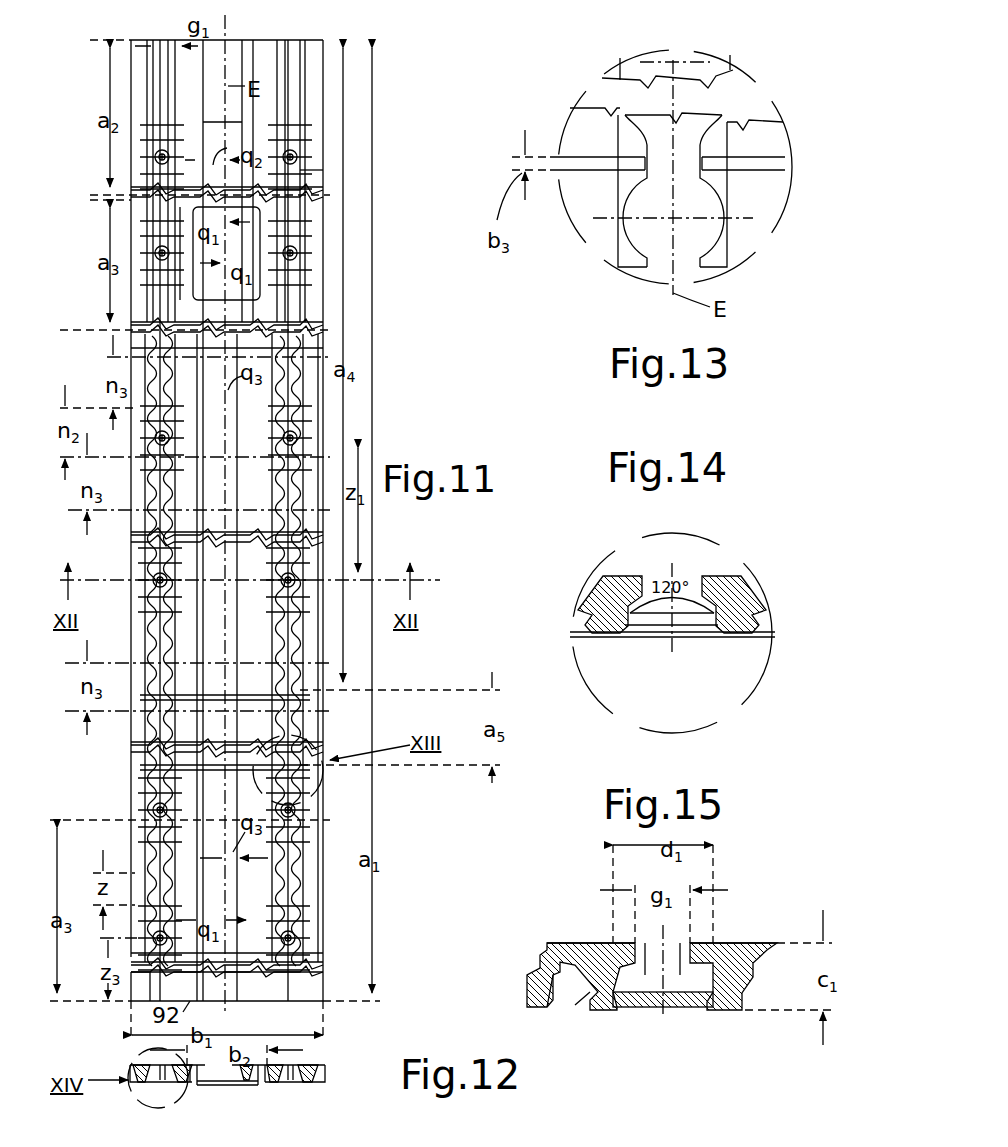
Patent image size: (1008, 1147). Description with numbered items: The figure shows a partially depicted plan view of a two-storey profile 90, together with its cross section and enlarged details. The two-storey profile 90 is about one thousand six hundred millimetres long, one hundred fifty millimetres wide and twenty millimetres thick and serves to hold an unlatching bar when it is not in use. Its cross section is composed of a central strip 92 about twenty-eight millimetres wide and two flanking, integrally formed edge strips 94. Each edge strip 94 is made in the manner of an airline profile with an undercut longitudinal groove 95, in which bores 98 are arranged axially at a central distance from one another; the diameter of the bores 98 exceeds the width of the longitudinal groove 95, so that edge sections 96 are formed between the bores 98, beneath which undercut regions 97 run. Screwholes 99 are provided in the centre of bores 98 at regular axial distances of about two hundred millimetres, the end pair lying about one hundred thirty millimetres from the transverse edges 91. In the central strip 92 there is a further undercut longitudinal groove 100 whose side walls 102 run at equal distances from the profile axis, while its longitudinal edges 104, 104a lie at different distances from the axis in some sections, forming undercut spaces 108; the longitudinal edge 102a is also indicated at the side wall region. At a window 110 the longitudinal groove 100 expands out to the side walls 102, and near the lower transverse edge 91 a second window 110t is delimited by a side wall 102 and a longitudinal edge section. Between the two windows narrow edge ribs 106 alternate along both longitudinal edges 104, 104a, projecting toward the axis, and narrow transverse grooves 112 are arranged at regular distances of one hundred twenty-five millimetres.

In FIG. 11, the two-storey profile 90 is at (318, 120).
In FIG. 12, the two-storey profile 90 is at (332, 1062).
In FIG. 14, the two-storey profile 90 is at (760, 578).
In FIG. 15, the two-storey profile 90 is at (762, 935).
In FIG. 11, the transverse edge 91 is at (158, 38).
In FIG. 11, the central strip 92 is at (300, 634).
In FIG. 13, the central strip 92 is at (630, 263).
In FIG. 11, the edge strip 94 is at (140, 1001).
In FIG. 13, the edge strip 94 is at (767, 187).
In FIG. 15, the edge strip 94 is at (590, 993).
In FIG. 11, the longitudinal groove 95 is at (295, 62).
In FIG. 12, the longitudinal groove 95 is at (310, 1083).
In FIG. 14, the longitudinal groove 95 is at (697, 587).
In FIG. 15, the longitudinal groove 95 is at (680, 952).
In FIG. 11, the edge section 96 is at (300, 400).
In FIG. 13, the edge section 96 is at (625, 180).
In FIG. 15, the edge section 96 is at (717, 950).
In FIG. 15, the undercut region 97 is at (700, 1010).
In FIG. 11, the bore 98 is at (300, 300).
In FIG. 13, the bore 98 is at (703, 238).
In FIG. 15, the bore 98 is at (620, 947).
In FIG. 11, the screwhole 99 is at (292, 262).
In FIG. 14, the screwhole 99 is at (673, 640).
In FIG. 11, the longitudinal groove 100 is at (213, 60).
In FIG. 12, the longitudinal groove 100 is at (213, 1085).
In FIG. 11, the side wall 102 is at (180, 277).
In FIG. 11, the side wall edge 102a is at (270, 300).
In FIG. 11, the longitudinal edge 104 is at (207, 122).
In FIG. 11, the longitudinal edge 104a is at (300, 170).
In FIG. 11, the edge rib 106 is at (170, 440).
In FIG. 12, the undercut space 108 is at (257, 1085).
In FIG. 11, the window 110 is at (253, 225).
In FIG. 11, the window 110t is at (300, 957).
In FIG. 11, the transverse groove 112 is at (303, 695).
In FIG. 13, the transverse groove 112 is at (577, 163).